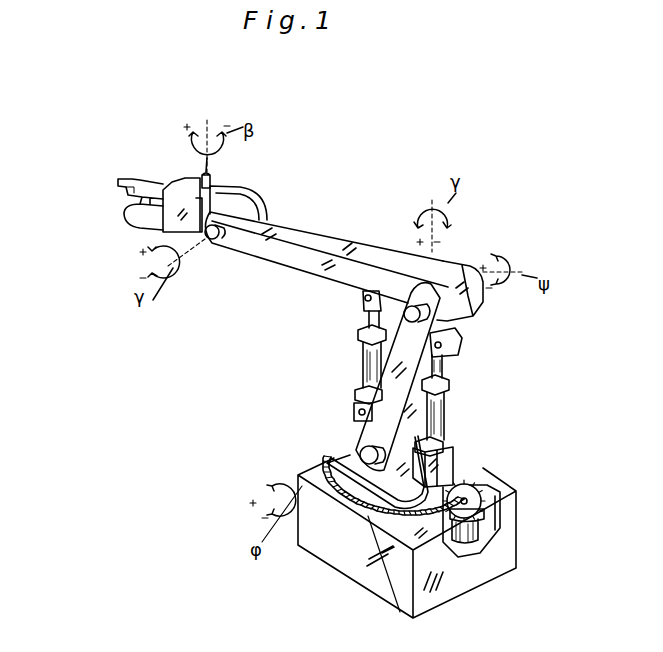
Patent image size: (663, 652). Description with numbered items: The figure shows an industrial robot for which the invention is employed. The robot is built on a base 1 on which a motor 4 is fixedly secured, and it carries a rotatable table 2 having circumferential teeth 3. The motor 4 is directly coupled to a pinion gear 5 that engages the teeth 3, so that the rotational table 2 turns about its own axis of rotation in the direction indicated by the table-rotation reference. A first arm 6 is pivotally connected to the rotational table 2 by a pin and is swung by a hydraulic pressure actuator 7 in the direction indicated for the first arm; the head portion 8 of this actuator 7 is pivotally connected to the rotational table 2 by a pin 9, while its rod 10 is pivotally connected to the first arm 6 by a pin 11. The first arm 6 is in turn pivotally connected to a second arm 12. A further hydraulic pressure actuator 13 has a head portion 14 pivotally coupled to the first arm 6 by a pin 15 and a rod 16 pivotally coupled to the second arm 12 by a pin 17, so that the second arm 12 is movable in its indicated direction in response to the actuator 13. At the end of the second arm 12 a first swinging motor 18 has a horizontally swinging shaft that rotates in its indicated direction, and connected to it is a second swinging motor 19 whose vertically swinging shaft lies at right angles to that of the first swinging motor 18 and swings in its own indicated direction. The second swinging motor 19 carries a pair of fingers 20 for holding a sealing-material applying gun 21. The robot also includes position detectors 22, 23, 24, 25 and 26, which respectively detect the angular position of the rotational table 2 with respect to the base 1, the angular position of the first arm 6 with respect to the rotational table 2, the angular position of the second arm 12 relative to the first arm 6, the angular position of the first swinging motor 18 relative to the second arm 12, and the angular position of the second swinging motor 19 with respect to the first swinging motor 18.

The base 1 is at (510, 553).
The rotatable table 2 is at (385, 584).
The circumferential teeth 3 is at (425, 530).
The motor 4 is at (475, 530).
The pinion gear 5 is at (477, 500).
The first arm 6 is at (423, 353).
The hydraulic pressure actuator 7 is at (443, 408).
The head portion 8 is at (416, 476).
The pin 9 is at (455, 468).
The rod 10 is at (443, 367).
The pin 11 is at (447, 342).
The second arm 12 is at (297, 258).
The hydraulic pressure actuator 13 is at (362, 363).
The head portion 14 is at (355, 398).
The pin 15 is at (358, 414).
The rod 16 is at (368, 313).
The pin 17 is at (364, 298).
The first swinging motor 18 is at (250, 198).
The second swinging motor 19 is at (187, 180).
The fingers 20 is at (157, 190).
The sealing-material applying gun 21 is at (127, 188).
The position detector 22 is at (467, 543).
The position detector 23 is at (360, 454).
The position detector 24 is at (400, 352).
The position detector 25 is at (222, 245).
The position detector 26 is at (211, 175).